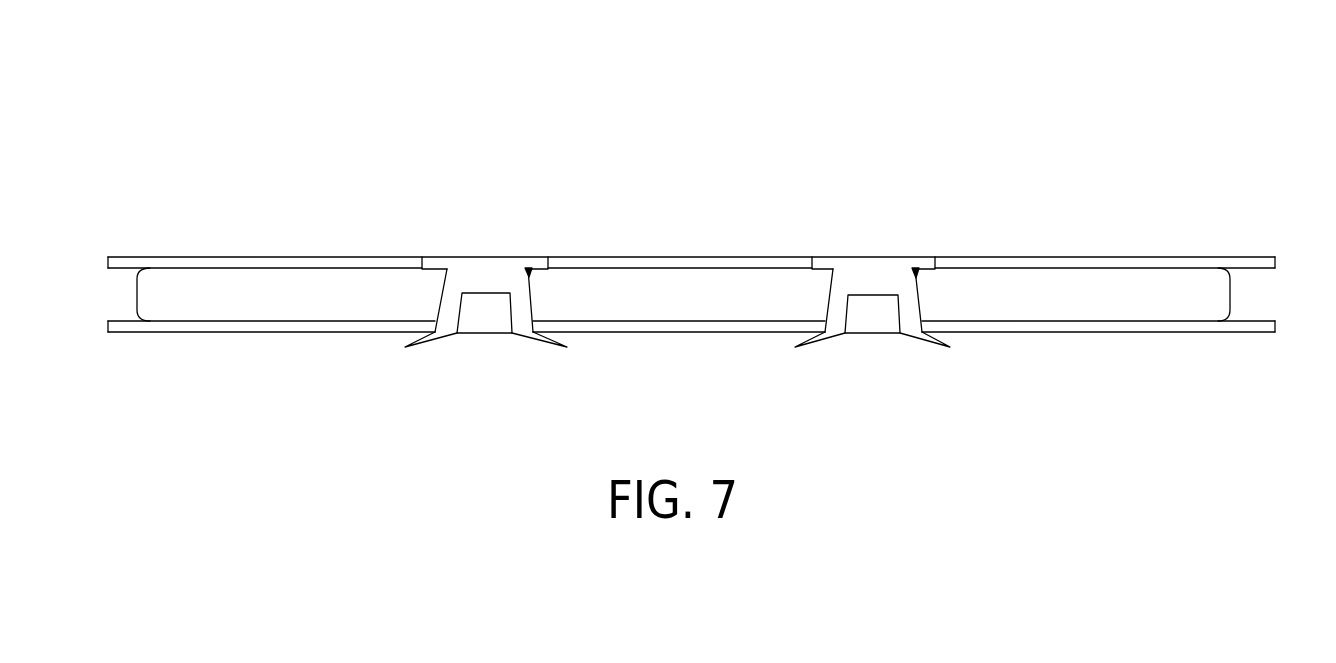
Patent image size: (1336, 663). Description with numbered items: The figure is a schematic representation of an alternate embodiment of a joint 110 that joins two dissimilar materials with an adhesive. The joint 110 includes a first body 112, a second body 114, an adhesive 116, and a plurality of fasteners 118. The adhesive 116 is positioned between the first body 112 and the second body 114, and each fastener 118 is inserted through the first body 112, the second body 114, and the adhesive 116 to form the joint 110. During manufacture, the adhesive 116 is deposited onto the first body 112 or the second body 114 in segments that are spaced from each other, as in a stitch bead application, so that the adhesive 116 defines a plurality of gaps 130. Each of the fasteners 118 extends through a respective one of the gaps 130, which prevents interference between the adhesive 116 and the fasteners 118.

The joint 110 is at (563, 100).
The first body 112 is at (330, 262).
The second body 114 is at (335, 327).
The adhesive 116 is at (795, 347).
The fasteners 118 is at (472, 271).
The gaps 130 is at (529, 266).